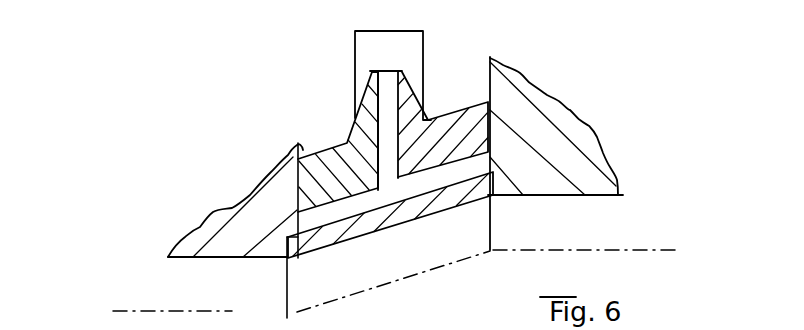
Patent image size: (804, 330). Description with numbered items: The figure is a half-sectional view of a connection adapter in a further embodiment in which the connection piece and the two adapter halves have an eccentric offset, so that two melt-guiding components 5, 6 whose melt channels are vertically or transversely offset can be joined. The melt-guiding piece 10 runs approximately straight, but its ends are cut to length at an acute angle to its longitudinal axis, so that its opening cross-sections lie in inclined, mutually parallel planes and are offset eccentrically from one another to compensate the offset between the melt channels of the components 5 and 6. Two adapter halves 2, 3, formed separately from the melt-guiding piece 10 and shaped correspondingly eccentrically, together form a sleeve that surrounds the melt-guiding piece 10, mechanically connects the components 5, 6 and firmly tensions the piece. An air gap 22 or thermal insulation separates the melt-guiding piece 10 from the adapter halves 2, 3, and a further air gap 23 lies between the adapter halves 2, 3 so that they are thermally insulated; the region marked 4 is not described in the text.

The adapter half 2 is at (318, 155).
The adapter half 3 is at (449, 120).
The gap between profile parts 4 is at (423, 50).
The melt-guiding component 5 is at (210, 248).
The melt-guiding component 6 is at (605, 189).
The melt-guiding piece 10 is at (403, 216).
The air gap 22 is at (470, 161).
The air gap 23 is at (388, 132).